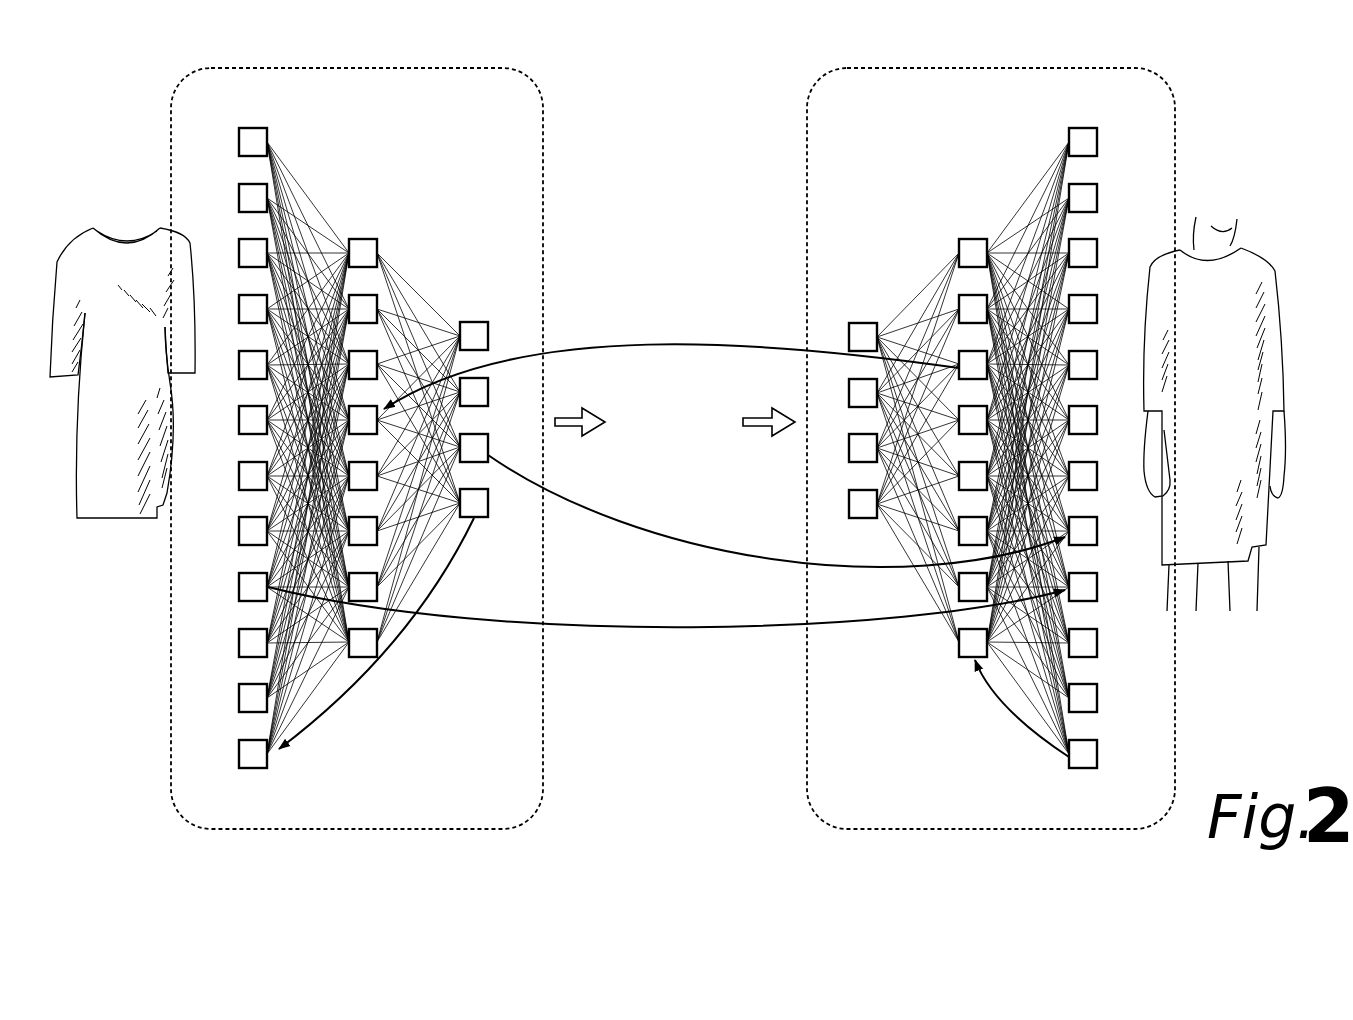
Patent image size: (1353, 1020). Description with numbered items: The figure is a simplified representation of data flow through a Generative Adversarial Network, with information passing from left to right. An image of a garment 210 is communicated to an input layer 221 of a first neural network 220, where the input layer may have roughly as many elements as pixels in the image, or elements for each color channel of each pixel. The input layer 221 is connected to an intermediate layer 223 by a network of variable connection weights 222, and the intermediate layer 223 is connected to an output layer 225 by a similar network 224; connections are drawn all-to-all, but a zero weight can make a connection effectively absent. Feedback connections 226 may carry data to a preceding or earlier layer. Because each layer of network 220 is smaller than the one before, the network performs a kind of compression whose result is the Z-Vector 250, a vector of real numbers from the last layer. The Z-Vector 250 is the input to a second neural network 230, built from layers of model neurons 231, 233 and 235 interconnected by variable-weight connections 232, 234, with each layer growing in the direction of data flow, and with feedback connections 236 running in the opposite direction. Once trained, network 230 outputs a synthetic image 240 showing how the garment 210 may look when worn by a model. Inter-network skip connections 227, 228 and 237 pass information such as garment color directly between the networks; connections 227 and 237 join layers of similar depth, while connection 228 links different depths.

The image of a garment 210 is at (108, 515).
The first neural network 220 is at (493, 797).
The input layer 221 is at (251, 122).
The network of variable connection weights 222 is at (347, 130).
The intermediate layer 223 is at (365, 233).
The similar network 224 is at (460, 251).
The output layer 225 is at (474, 318).
The feedback connections 226 is at (318, 726).
The inter-network connection 227 is at (650, 628).
The inter-network connection 228 is at (698, 543).
The second neural network 230 is at (879, 797).
The layer of model neurons 231 is at (863, 318).
The variable-weight connections 232 is at (950, 249).
The layer of model neurons 233 is at (972, 233).
The variable-weight connections 234 is at (1065, 129).
The layer of model neurons 235 is at (1083, 122).
The feedback connections 236 is at (1033, 740).
The inter-network connection 237 is at (653, 343).
The synthetic image 240 is at (1264, 217).
The Z-Vector 250 is at (700, 438).